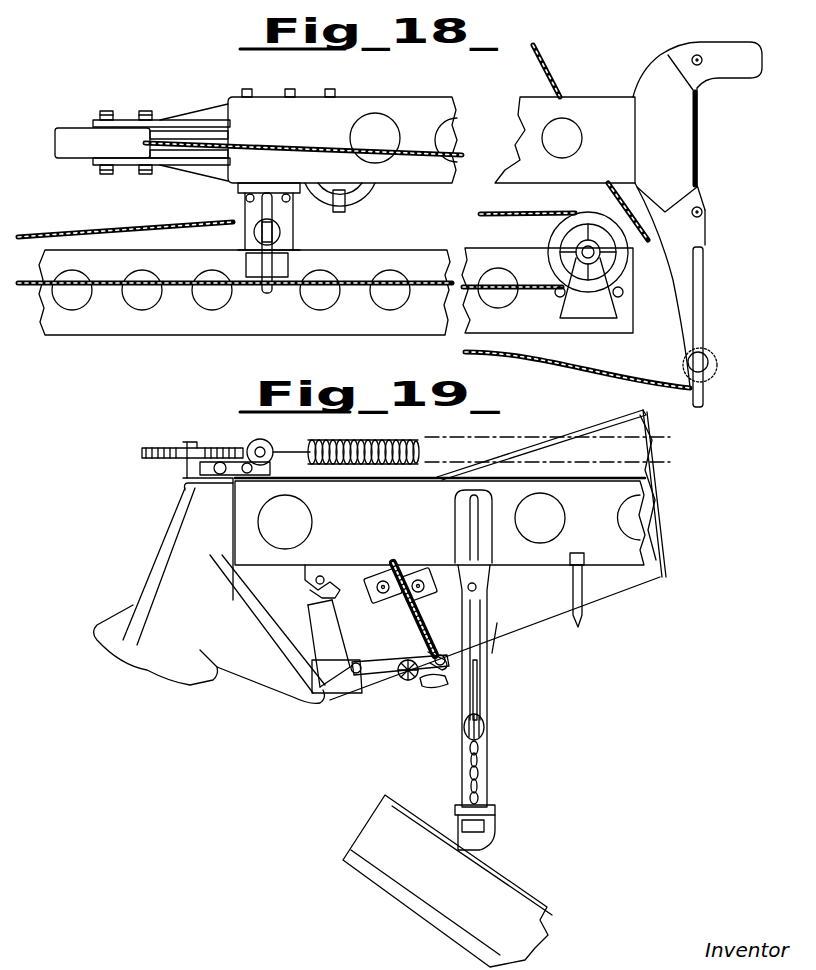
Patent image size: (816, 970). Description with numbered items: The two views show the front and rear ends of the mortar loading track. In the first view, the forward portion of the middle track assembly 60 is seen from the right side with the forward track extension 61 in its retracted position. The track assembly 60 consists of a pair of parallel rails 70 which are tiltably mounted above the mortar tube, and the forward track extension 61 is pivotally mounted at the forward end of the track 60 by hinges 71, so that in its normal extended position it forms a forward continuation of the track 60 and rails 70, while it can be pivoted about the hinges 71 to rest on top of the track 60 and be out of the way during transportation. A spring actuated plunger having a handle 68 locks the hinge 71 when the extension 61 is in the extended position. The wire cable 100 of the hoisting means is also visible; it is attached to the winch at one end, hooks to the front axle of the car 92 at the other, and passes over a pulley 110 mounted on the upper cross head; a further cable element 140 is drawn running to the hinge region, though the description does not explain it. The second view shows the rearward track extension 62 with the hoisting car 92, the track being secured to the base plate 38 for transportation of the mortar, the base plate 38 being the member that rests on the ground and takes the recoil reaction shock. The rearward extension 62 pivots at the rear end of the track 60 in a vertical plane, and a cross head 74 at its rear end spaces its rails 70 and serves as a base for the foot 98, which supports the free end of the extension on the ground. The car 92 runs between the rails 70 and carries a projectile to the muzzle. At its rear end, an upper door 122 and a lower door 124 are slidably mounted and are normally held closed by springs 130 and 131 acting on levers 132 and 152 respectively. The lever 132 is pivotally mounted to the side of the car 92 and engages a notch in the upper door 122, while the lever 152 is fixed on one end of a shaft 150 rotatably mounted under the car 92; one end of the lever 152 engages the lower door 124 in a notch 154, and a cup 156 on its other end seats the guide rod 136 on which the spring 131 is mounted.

In FIG. 19, the base plate 38 is at (395, 900).
In FIG. 18, the middle track assembly 60 is at (310, 335).
In FIG. 18, the forward track extension 61 is at (393, 83).
In FIG. 19, the rearward track extension 62 is at (182, 497).
In FIG. 18, the handle 68 is at (703, 398).
In FIG. 18, the rails 70 is at (445, 83).
In FIG. 19, the rails 70 is at (519, 565).
In FIG. 18, the hinges 71 is at (712, 212).
In FIG. 19, the cross head 74 is at (232, 530).
In FIG. 19, the car 92 is at (532, 620).
In FIG. 19, the foot 98 is at (160, 552).
In FIG. 18, the wire cable 100 is at (453, 154).
In FIG. 18, the pulley 110 is at (216, 135).
In FIG. 19, the upper door 122 is at (306, 583).
In FIG. 19, the lower door 124 is at (333, 643).
In FIG. 19, the spring 130 is at (406, 565).
In FIG. 19, the spring 131 is at (418, 638).
In FIG. 19, the lever 132 is at (340, 565).
In FIG. 19, the guide rod 136 is at (452, 633).
In FIG. 18, the cable 140 is at (553, 78).
In FIG. 19, the shaft 150 is at (390, 675).
In FIG. 19, the lever 152 is at (377, 677).
In FIG. 19, the notch 154 is at (345, 693).
In FIG. 19, the cup 156 is at (443, 678).